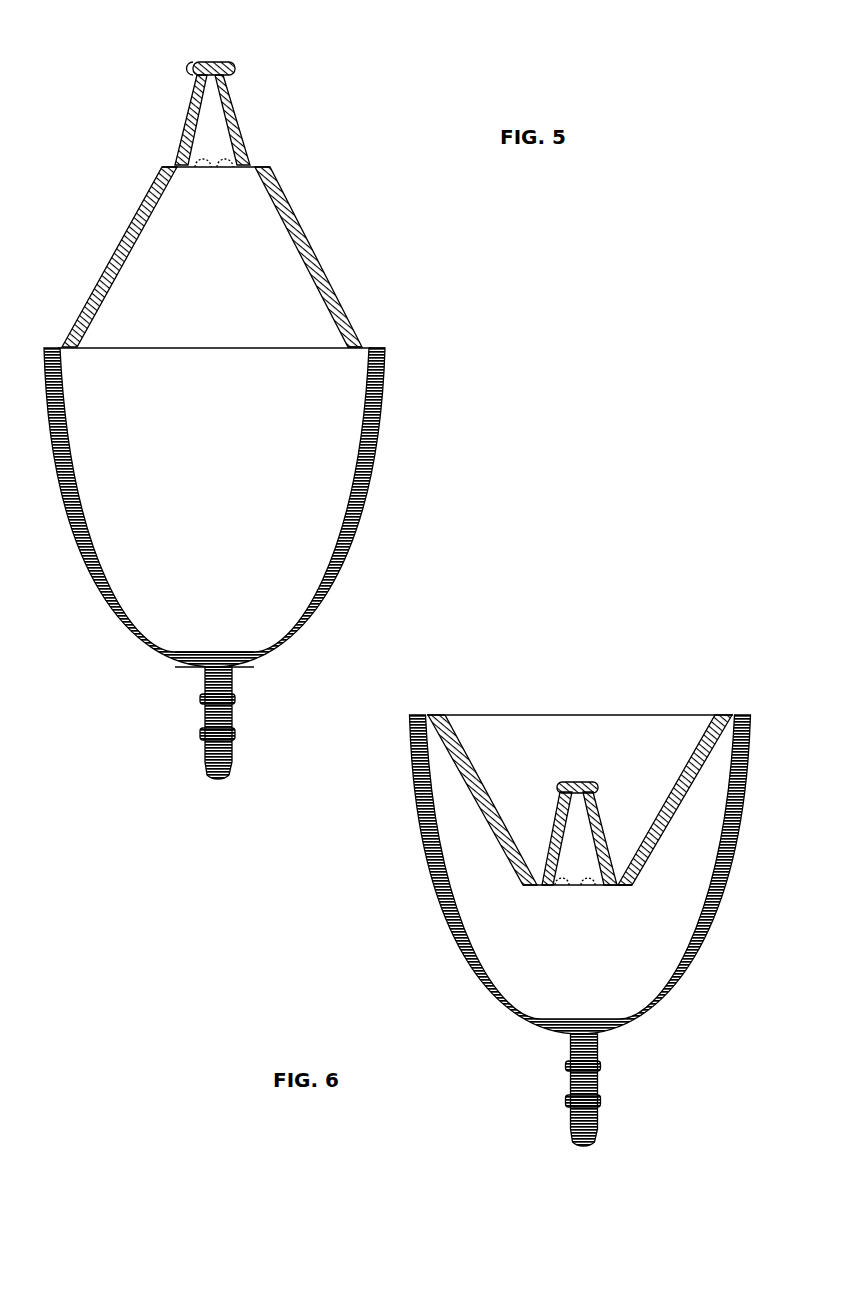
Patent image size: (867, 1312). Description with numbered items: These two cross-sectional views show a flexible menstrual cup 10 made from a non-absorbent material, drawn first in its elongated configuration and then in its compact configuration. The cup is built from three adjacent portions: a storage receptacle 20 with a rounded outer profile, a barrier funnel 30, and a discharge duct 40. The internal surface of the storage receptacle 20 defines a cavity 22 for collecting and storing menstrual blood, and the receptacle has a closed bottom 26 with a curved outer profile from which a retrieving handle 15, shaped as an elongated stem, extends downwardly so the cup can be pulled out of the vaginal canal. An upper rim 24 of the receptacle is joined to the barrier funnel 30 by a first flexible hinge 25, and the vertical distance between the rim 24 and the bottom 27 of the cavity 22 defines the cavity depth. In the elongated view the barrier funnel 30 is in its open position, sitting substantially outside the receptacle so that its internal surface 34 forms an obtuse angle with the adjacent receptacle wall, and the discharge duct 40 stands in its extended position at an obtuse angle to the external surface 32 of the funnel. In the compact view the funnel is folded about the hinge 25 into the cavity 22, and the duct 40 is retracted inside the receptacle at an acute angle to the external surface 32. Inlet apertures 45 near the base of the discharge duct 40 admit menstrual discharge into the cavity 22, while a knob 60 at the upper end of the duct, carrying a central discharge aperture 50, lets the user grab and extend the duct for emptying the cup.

In FIG. 5, the menstrual cup 10 is at (33, 205).
In FIG. 6, the menstrual cup 10 is at (735, 1045).
In FIG. 5, the retrieving handle 15 is at (235, 720).
In FIG. 5, the storage receptacle 20 is at (363, 517).
In FIG. 5, the cavity 22 is at (208, 500).
In FIG. 6, the cavity 22 is at (567, 965).
In FIG. 5, the upper rim 24 is at (388, 357).
In FIG. 5, the first flexible hinge 25 is at (368, 343).
In FIG. 5, the closed bottom 26 is at (185, 667).
In FIG. 5, the bottom of the cavity 27 is at (230, 647).
In FIG. 5, the barrier funnel 30 is at (320, 250).
In FIG. 6, the external surface of the barrier funnel 32 is at (680, 770).
In FIG. 6, the internal surface of the barrier funnel 34 is at (675, 812).
In FIG. 5, the discharge duct 40 is at (243, 118).
In FIG. 5, the inlet apertures 45 is at (178, 157).
In FIG. 5, the discharge aperture 50 is at (215, 57).
In FIG. 5, the knob 60 is at (192, 70).